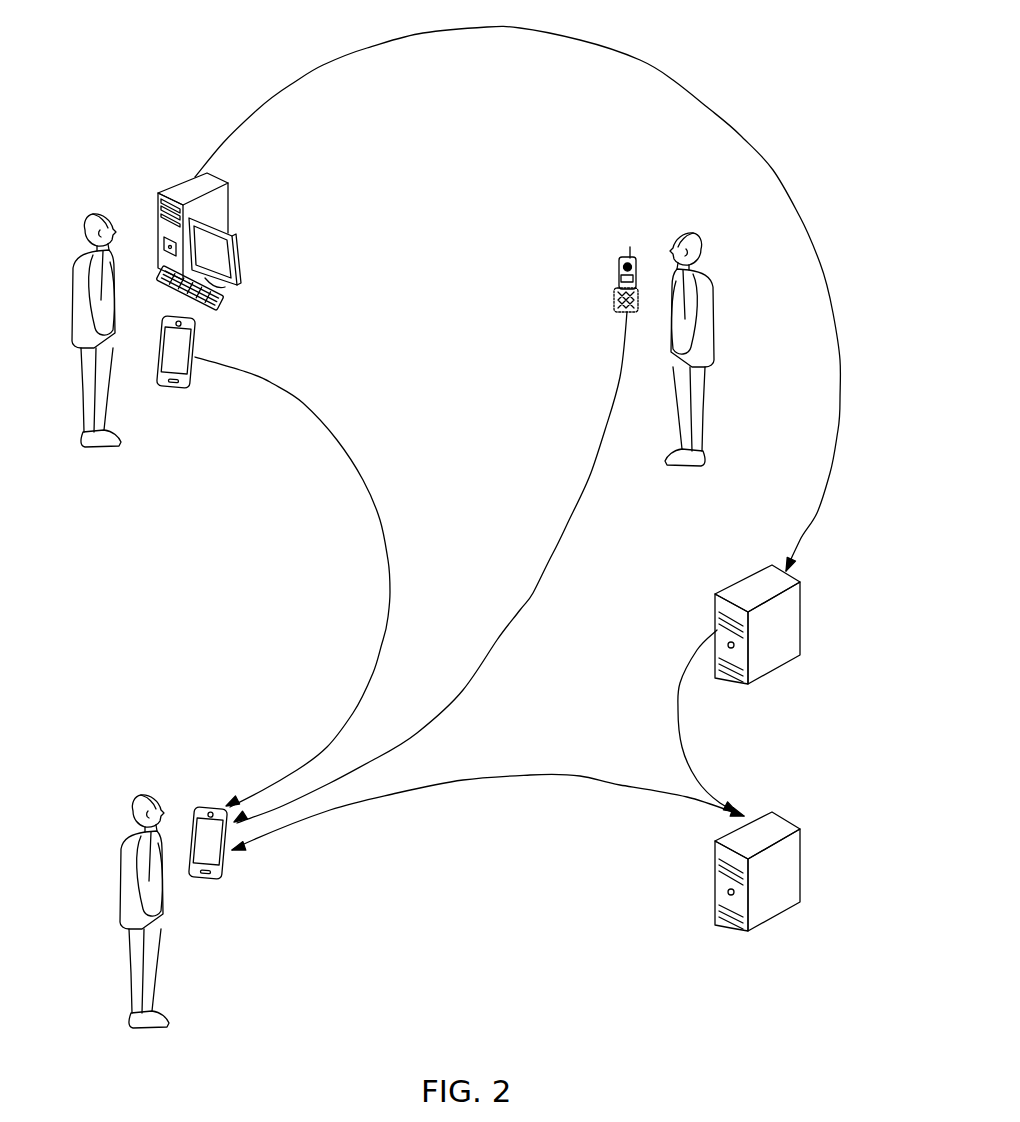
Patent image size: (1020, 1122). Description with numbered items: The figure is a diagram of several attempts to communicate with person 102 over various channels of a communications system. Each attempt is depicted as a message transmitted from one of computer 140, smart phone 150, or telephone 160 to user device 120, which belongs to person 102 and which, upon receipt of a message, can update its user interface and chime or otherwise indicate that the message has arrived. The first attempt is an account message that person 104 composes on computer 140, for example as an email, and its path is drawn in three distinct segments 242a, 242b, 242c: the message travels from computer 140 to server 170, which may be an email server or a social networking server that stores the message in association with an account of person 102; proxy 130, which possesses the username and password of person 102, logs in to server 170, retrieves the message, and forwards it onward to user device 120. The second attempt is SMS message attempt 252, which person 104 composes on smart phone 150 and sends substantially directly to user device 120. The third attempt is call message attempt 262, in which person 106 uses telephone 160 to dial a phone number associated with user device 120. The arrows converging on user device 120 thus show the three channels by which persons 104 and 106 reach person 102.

The person 102 is at (144, 798).
The person 104 is at (93, 211).
The person 106 is at (701, 228).
The user device 120 is at (213, 884).
The proxy 130 is at (713, 886).
The computer 140 is at (222, 184).
The smart phone 150 is at (178, 390).
The telephone 160 is at (616, 262).
The server 170 is at (713, 586).
The account message attempt segment 242a is at (365, 47).
The account message attempt segment 242b is at (678, 708).
The account message attempt segment 242c is at (480, 777).
The SMS message attempt 252 is at (373, 664).
The call message attempt 262 is at (569, 512).